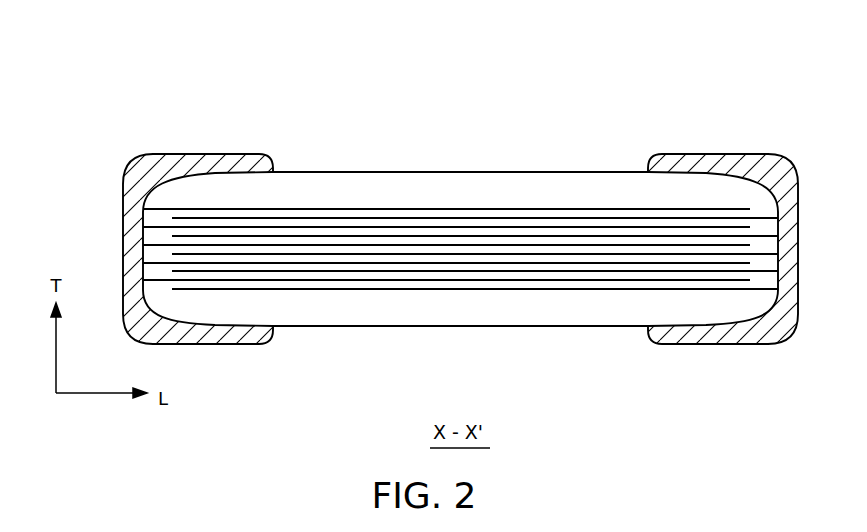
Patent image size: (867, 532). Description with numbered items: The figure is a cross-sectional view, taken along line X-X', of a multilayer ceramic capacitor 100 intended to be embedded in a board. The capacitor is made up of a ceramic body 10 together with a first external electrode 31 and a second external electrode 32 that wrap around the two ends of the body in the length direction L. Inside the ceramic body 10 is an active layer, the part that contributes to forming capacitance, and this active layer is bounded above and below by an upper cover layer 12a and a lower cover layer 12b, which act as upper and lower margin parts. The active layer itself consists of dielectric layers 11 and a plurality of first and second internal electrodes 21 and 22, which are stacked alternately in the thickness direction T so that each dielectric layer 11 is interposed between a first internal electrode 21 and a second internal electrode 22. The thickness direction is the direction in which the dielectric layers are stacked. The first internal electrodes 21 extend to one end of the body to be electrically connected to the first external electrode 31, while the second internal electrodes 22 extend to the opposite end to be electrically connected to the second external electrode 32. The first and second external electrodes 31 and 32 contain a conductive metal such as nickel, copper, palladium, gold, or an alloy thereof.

The multilayer ceramic capacitor 100 is at (443, 52).
The ceramic body 10 is at (510, 170).
The dielectric layer 11 is at (384, 215).
The upper cover layer 12a is at (600, 188).
The lower cover layer 12b is at (603, 310).
The first internal electrode 21 is at (324, 207).
The second internal electrode 22 is at (437, 218).
The first external electrode 31 is at (201, 170).
The second external electrode 32 is at (718, 170).